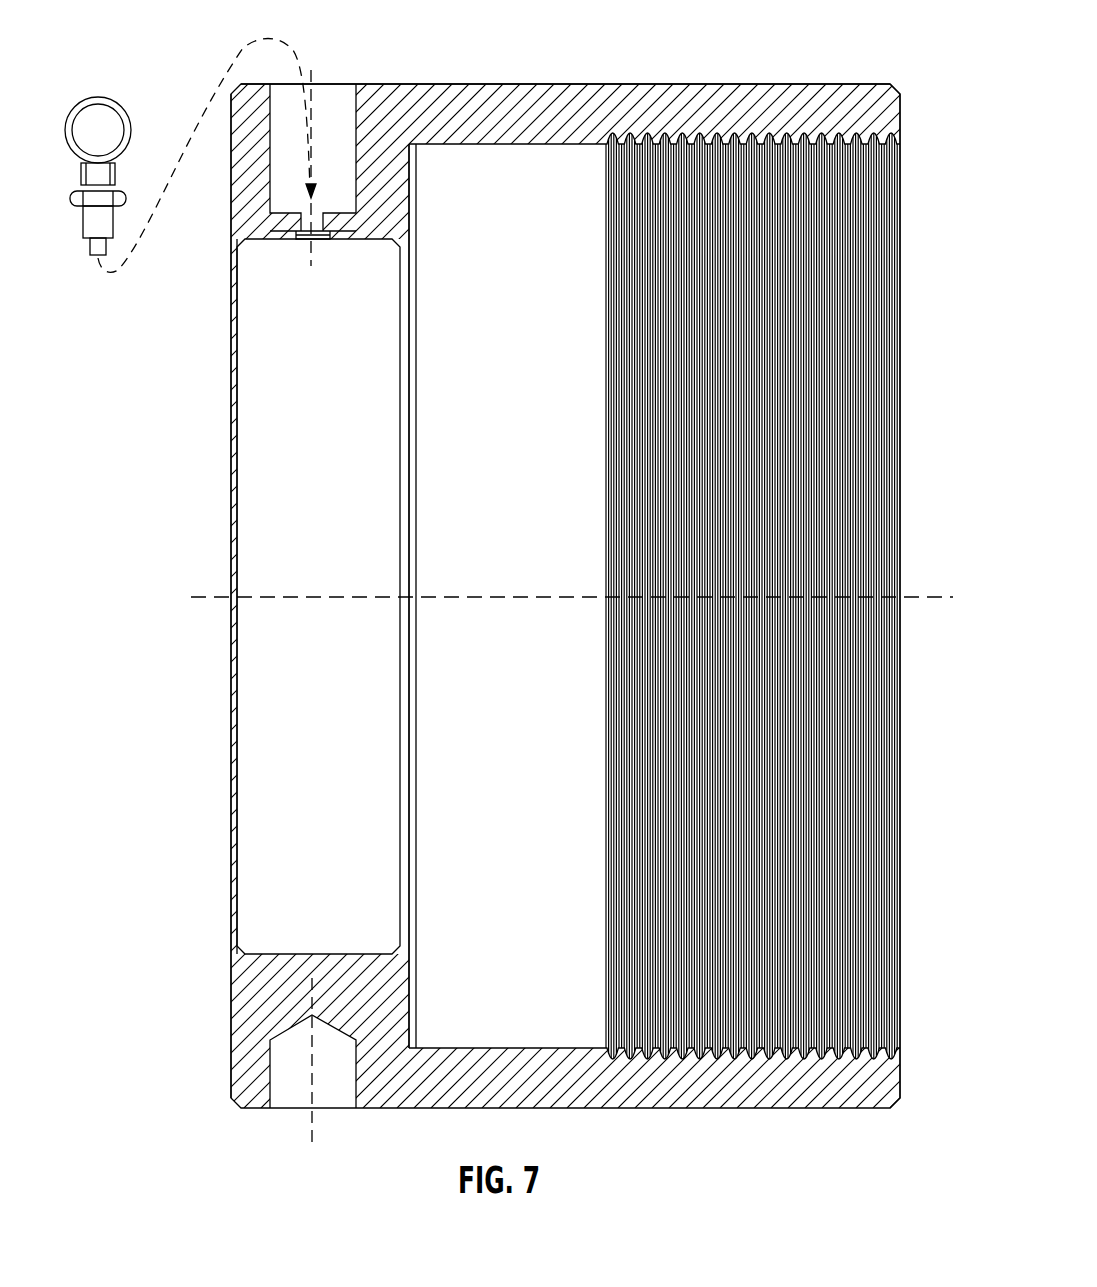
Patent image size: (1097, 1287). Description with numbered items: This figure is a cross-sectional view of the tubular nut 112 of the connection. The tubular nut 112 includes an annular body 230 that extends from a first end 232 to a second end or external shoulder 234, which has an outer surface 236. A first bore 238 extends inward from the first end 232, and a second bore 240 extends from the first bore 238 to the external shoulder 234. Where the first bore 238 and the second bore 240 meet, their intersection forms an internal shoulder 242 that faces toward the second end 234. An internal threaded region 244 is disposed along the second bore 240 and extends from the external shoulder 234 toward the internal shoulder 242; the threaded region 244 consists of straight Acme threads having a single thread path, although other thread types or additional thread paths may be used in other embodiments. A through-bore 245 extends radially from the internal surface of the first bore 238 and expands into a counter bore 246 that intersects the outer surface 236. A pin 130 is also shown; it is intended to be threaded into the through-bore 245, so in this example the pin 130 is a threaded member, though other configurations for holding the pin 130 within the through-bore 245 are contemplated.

The tubular nut 112 is at (413, 88).
The pin 130 is at (112, 97).
The annular body 230 is at (512, 90).
The first end 232 is at (226, 742).
The second end or external shoulder 234 is at (892, 110).
The outer surface 236 is at (645, 76).
The first bore 238 is at (252, 476).
The second bore 240 is at (435, 490).
The internal shoulder 242 is at (401, 197).
The internal threaded region 244 is at (850, 360).
The through-bore 245 is at (300, 232).
The counter bore 246 is at (333, 88).